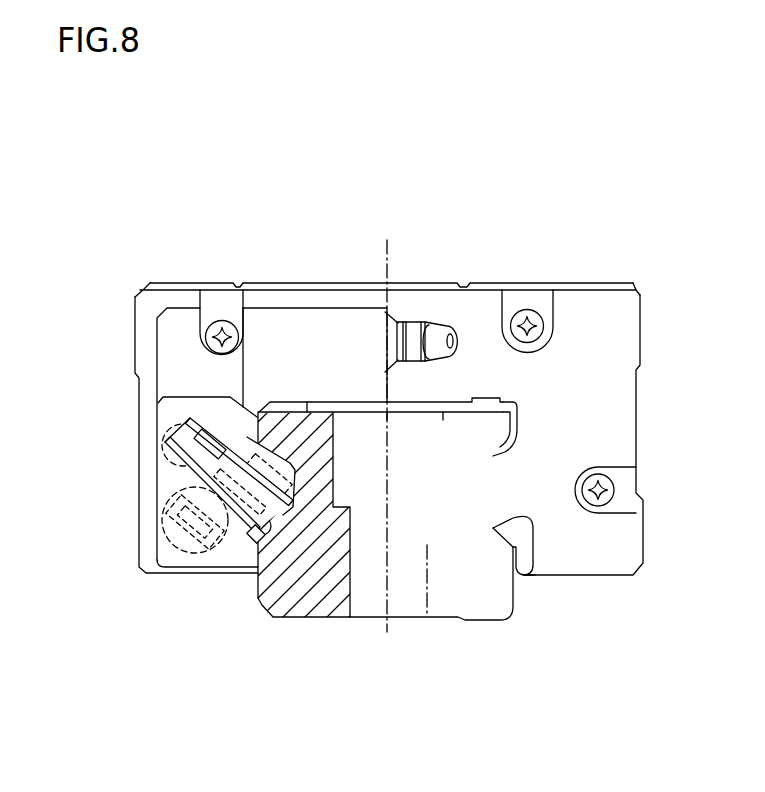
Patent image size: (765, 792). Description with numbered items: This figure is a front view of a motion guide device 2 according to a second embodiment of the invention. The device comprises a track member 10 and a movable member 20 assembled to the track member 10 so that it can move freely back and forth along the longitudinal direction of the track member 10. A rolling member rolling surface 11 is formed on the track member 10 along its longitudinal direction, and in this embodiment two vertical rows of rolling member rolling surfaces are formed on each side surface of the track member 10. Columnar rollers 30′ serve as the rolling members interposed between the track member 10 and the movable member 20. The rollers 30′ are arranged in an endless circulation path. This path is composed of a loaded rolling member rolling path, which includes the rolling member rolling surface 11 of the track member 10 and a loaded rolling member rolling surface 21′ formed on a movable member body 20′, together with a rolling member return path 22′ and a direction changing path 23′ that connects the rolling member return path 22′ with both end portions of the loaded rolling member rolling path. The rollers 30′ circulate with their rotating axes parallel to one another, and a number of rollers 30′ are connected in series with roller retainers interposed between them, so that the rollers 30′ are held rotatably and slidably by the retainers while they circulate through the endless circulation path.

The motion guide device 2 is at (627, 130).
The track member 10 is at (473, 593).
The rolling member rolling surface 11 is at (520, 450).
The movable member 20 is at (381, 545).
The movable member body 20′ is at (582, 318).
The loaded rolling member rolling surface 21′ is at (262, 530).
The rolling member return path 22′ is at (190, 418).
The direction changing path 23′ is at (237, 487).
The columnar roller 30′ is at (256, 534).